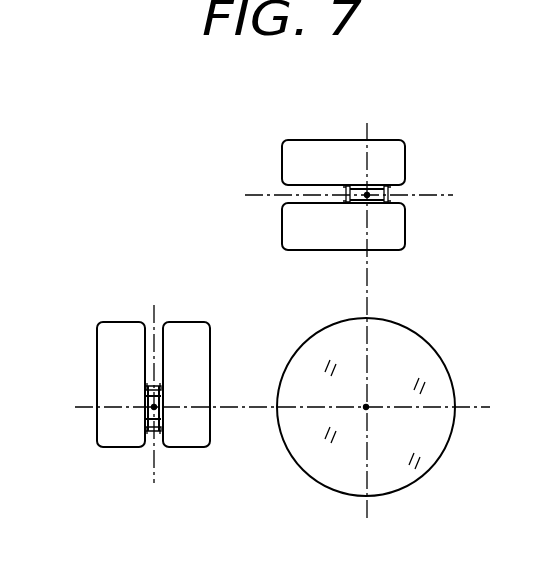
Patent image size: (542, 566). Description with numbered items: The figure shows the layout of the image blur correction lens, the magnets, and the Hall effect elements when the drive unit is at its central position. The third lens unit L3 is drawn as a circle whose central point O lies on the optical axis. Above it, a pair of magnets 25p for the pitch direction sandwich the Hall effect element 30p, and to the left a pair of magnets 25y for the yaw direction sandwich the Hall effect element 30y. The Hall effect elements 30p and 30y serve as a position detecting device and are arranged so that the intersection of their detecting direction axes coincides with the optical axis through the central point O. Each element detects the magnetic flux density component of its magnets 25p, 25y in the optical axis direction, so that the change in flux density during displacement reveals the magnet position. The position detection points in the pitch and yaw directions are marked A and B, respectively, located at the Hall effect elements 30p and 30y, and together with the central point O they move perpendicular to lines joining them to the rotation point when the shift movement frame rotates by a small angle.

The magnet 25p is at (290, 149).
The Hall effect element 30p is at (392, 198).
The position detection point A is at (392, 193).
The magnet 25y is at (110, 335).
The Hall effect element 30y is at (158, 433).
The position detection point B is at (152, 411).
The central point of the third lens unit O is at (379, 424).
The third lens unit L3 is at (390, 483).